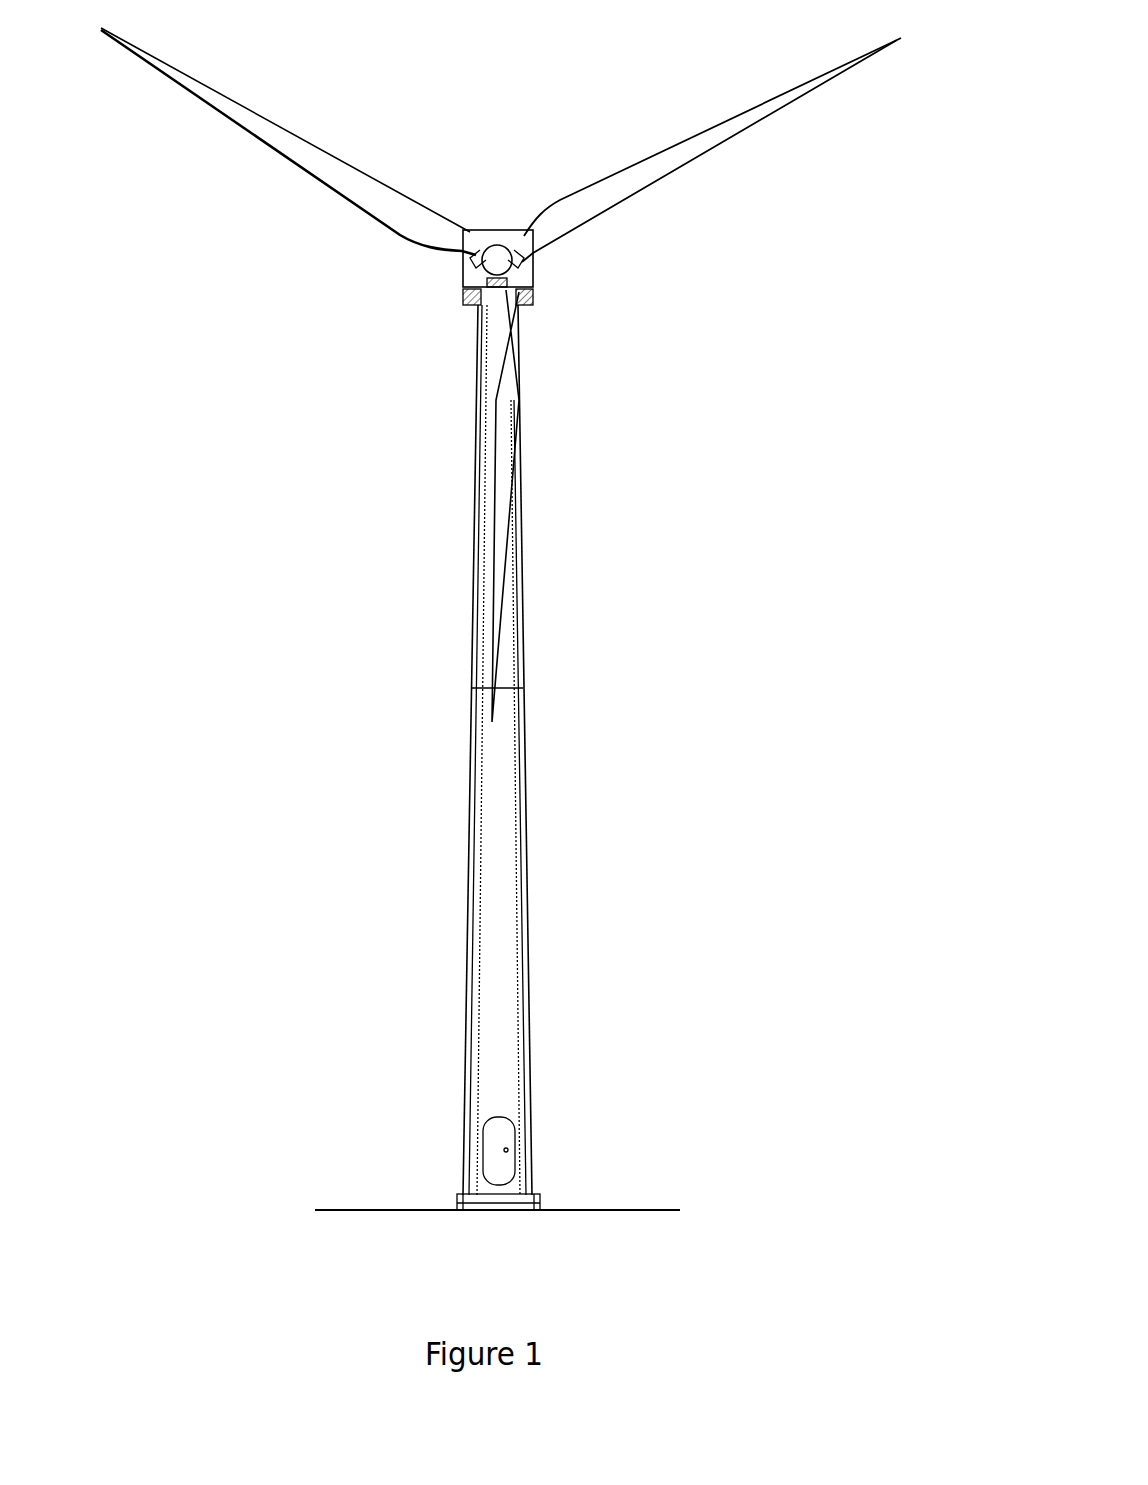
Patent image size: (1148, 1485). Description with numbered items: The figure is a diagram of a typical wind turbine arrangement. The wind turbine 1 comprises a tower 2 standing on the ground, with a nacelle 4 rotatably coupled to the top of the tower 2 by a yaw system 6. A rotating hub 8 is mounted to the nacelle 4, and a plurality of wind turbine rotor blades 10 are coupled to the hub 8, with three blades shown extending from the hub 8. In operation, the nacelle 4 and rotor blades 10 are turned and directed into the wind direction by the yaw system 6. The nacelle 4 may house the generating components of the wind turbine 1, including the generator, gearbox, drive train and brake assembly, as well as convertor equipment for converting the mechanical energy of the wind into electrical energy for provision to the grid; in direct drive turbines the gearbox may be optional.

The wind turbine 1 is at (214, 184).
The tower 2 is at (517, 856).
The nacelle 4 is at (492, 230).
The yaw system 6 is at (525, 307).
The rotating hub 8 is at (493, 264).
The wind turbine rotor blades 10 is at (298, 155).